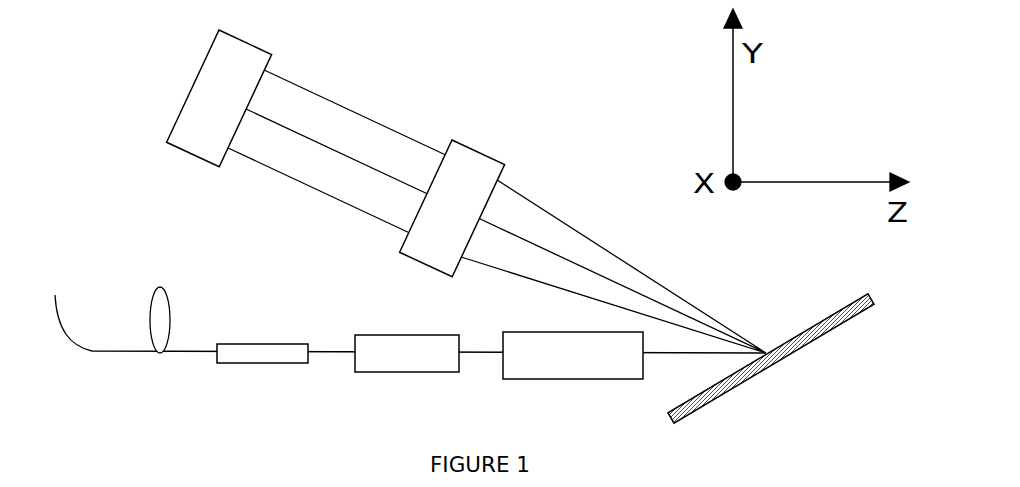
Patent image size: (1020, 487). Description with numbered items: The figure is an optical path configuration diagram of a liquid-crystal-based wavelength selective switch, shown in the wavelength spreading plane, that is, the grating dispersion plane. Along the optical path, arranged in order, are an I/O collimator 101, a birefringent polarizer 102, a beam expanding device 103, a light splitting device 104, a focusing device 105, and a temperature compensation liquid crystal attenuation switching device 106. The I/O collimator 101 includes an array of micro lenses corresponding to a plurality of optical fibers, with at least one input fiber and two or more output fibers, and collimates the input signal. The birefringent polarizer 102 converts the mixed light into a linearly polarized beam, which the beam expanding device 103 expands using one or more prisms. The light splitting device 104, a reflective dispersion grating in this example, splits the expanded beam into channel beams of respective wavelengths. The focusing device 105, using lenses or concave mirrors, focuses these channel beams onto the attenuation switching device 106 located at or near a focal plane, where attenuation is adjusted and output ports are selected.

The I/O collimator 101 is at (262, 380).
The birefringent polarizer 102 is at (407, 375).
The beam expanding device 103 is at (573, 374).
The light splitting device 104 is at (771, 358).
The focusing device 105 is at (426, 213).
The temperature compensation liquid crystal attenuation switching device 106 is at (204, 114).